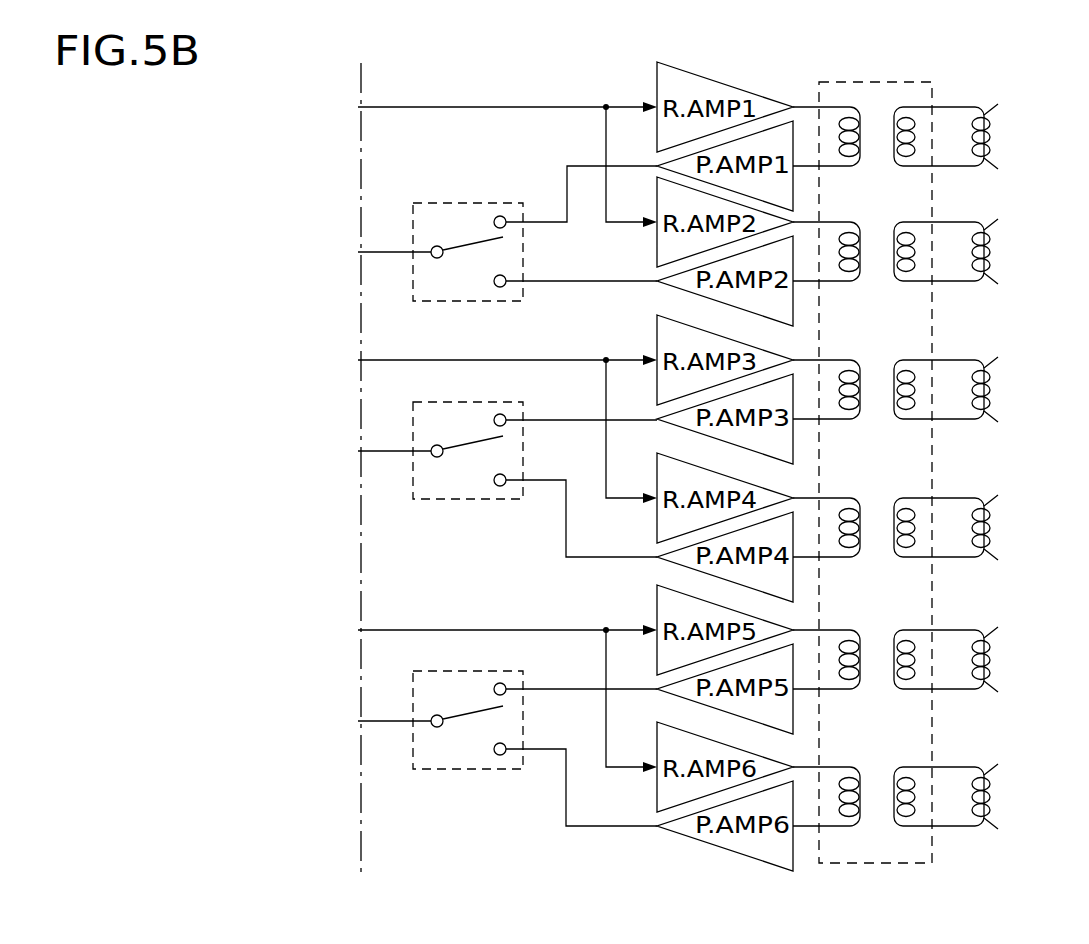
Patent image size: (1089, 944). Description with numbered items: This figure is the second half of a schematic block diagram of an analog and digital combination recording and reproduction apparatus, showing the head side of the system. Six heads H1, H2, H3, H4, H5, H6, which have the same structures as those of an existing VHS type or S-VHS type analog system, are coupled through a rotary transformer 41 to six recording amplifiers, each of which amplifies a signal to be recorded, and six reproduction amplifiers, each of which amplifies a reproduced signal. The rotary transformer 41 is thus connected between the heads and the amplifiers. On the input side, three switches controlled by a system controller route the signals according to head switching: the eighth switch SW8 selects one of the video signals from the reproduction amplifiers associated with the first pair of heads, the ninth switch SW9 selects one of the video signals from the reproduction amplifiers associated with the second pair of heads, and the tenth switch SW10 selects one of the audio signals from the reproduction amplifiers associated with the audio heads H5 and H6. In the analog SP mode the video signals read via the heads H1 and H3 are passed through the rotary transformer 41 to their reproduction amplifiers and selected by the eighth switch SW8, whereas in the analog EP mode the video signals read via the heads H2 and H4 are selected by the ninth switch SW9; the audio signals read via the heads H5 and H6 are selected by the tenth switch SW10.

The rotary transformer 41 is at (849, 82).
The eighth switch SW8 is at (486, 186).
The ninth switch SW9 is at (442, 402).
The tenth switch SW10 is at (463, 671).
The head H1 is at (979, 136).
The head H2 is at (979, 389).
The head H3 is at (979, 251).
The head H4 is at (979, 527).
The head H5 is at (979, 659).
The head H6 is at (979, 796).